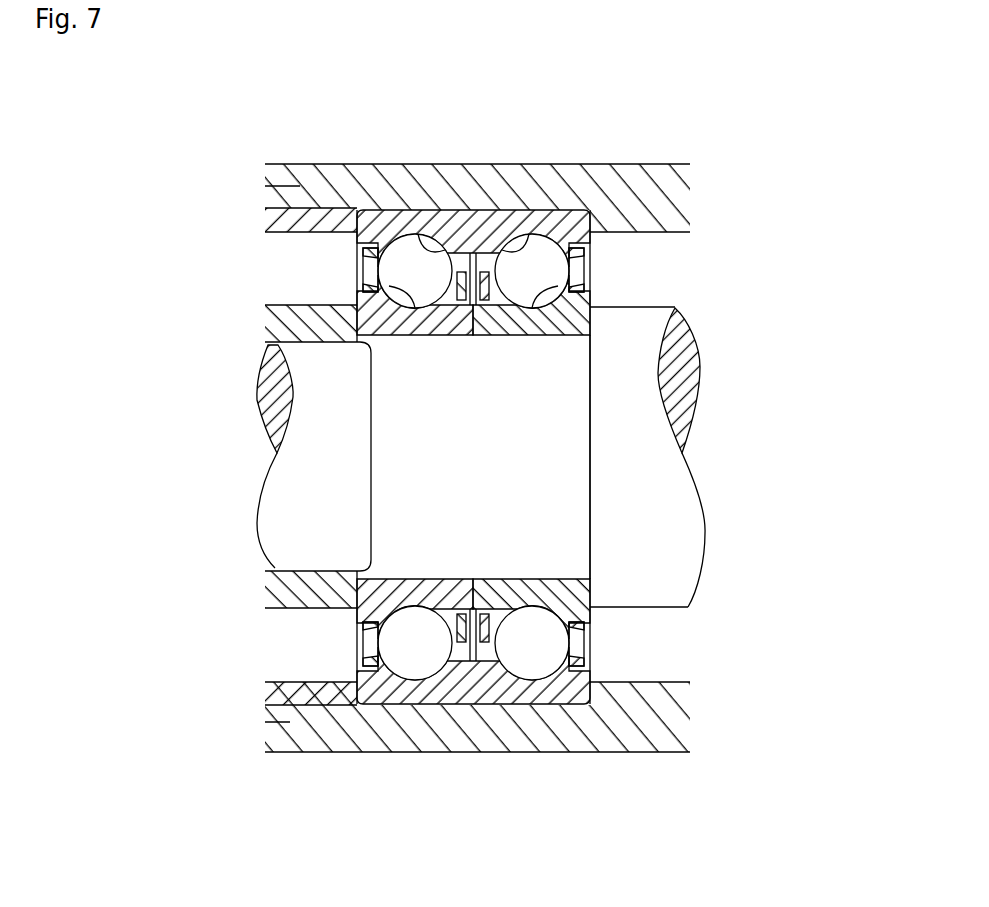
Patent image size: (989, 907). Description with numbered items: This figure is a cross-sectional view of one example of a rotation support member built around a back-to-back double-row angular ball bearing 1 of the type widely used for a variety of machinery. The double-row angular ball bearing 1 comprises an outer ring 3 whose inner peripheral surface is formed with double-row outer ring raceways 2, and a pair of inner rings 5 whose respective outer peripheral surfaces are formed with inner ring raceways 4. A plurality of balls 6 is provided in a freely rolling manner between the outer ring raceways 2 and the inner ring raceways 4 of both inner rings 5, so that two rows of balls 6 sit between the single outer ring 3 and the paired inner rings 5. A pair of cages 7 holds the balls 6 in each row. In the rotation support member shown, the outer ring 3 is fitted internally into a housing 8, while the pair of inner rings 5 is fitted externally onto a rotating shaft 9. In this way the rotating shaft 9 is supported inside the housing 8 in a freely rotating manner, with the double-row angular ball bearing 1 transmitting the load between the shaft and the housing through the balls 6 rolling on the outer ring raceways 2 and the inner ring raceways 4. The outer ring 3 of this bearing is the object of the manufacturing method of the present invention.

The double-row angular ball bearing 1 is at (473, 428).
The outer ring raceways 2 is at (498, 265).
The outer ring 3 is at (557, 215).
The inner ring raceways 4 is at (360, 278).
The inner rings 5 is at (360, 302).
The balls 6 is at (398, 257).
The cages 7 is at (362, 657).
The housing 8 is at (485, 740).
The rotating shaft 9 is at (307, 504).